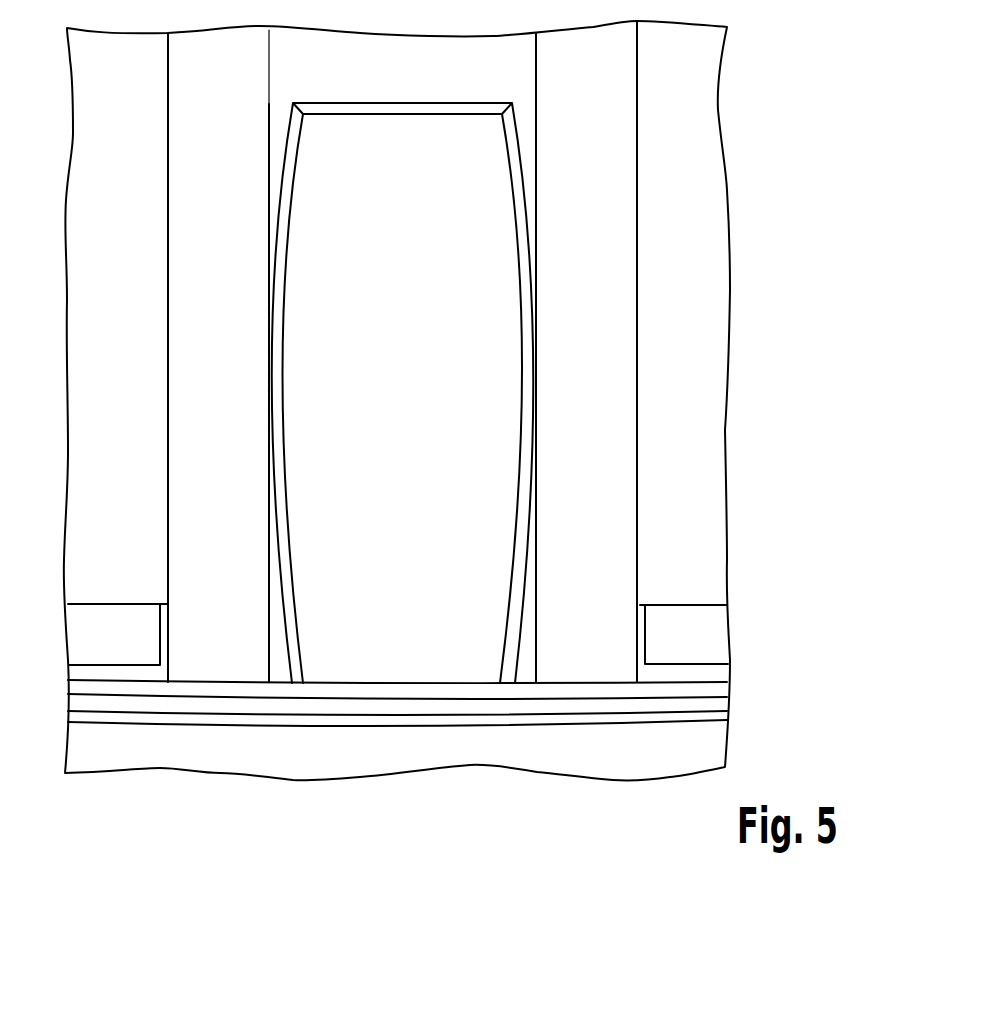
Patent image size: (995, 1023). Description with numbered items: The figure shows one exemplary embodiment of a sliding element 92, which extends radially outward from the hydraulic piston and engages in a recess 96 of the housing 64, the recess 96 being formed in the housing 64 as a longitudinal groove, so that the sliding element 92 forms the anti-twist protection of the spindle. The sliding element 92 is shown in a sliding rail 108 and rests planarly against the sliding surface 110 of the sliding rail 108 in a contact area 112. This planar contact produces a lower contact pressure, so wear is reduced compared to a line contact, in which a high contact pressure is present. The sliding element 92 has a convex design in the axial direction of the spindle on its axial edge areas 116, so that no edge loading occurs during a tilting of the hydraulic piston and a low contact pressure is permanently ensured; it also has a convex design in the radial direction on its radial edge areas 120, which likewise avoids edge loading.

The housing 64 is at (707, 212).
The sliding element 92 is at (408, 165).
The recess 96 is at (633, 470).
The sliding rail 108 is at (588, 232).
The sliding surface 110 is at (524, 593).
The contact area 112 is at (537, 352).
The axial edge area 116 is at (517, 120).
The radial edge area 120 is at (525, 363).